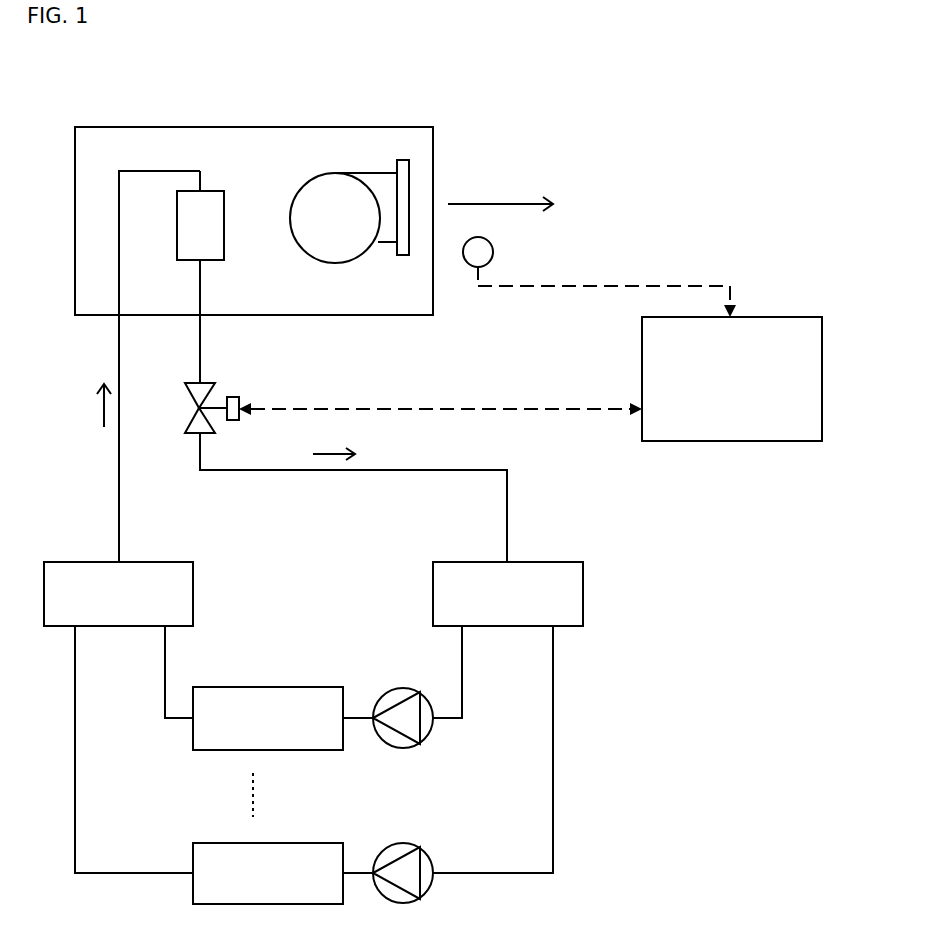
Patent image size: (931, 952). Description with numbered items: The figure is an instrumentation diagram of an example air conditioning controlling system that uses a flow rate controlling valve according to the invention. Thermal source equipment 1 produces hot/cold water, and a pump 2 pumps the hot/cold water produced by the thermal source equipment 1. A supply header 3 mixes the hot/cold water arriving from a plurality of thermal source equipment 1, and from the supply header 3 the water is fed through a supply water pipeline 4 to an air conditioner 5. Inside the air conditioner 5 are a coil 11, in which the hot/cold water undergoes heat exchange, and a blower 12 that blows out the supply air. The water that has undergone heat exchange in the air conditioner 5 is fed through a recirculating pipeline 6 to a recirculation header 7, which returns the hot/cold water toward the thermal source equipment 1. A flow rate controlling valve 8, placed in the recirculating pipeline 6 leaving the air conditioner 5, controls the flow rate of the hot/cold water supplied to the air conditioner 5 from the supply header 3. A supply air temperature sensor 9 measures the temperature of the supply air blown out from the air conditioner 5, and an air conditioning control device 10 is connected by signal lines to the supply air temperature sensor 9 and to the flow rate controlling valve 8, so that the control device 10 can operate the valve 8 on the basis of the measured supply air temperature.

The thermal source equipment 1 is at (297, 750).
The pump 2 is at (400, 750).
The supply header 3 is at (165, 562).
The supply water pipeline 4 is at (120, 335).
The air conditioner 5 is at (223, 127).
The recirculating pipeline 6 is at (199, 335).
The recirculation header 7 is at (545, 562).
The flow rate controlling valve 8 is at (187, 435).
The supply air temperature sensor 9 is at (468, 270).
The air conditioning control device 10 is at (768, 317).
The coil 11 is at (188, 260).
The blower 12 is at (300, 250).